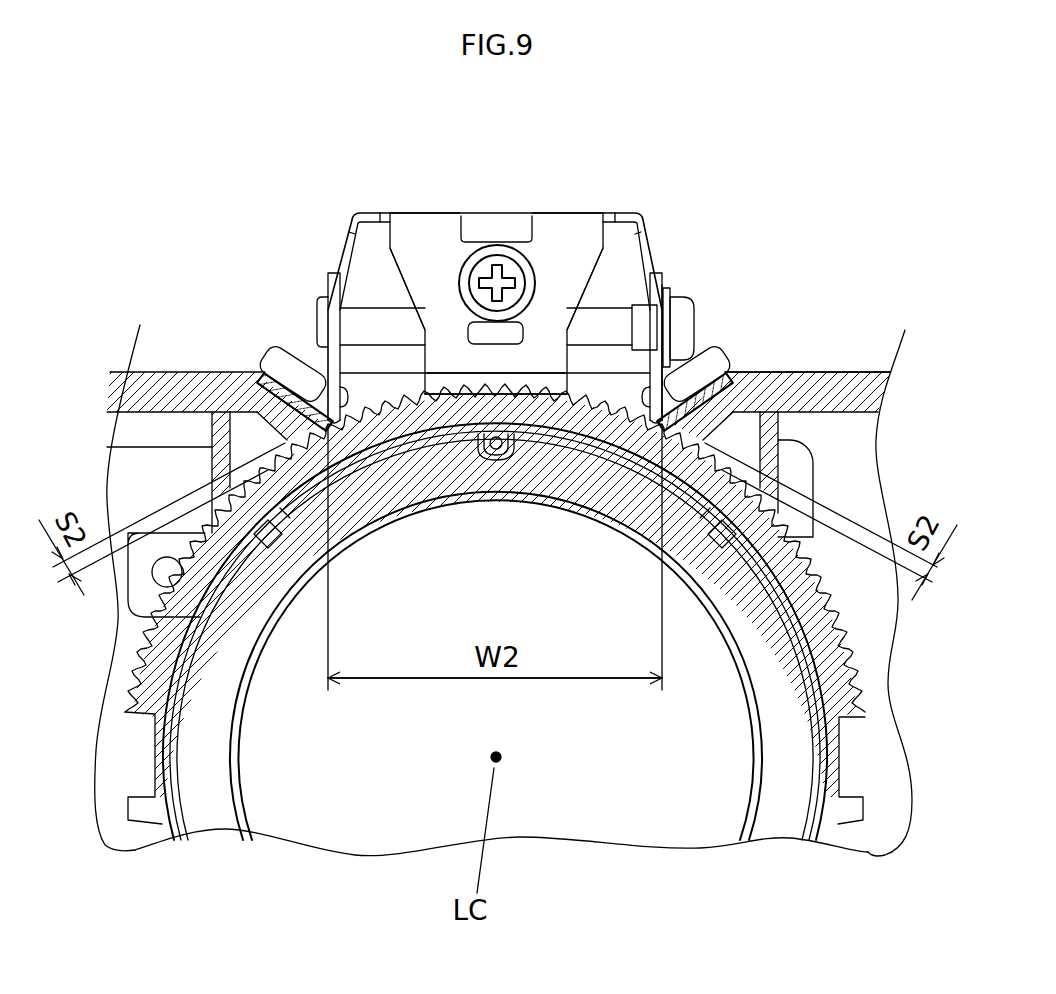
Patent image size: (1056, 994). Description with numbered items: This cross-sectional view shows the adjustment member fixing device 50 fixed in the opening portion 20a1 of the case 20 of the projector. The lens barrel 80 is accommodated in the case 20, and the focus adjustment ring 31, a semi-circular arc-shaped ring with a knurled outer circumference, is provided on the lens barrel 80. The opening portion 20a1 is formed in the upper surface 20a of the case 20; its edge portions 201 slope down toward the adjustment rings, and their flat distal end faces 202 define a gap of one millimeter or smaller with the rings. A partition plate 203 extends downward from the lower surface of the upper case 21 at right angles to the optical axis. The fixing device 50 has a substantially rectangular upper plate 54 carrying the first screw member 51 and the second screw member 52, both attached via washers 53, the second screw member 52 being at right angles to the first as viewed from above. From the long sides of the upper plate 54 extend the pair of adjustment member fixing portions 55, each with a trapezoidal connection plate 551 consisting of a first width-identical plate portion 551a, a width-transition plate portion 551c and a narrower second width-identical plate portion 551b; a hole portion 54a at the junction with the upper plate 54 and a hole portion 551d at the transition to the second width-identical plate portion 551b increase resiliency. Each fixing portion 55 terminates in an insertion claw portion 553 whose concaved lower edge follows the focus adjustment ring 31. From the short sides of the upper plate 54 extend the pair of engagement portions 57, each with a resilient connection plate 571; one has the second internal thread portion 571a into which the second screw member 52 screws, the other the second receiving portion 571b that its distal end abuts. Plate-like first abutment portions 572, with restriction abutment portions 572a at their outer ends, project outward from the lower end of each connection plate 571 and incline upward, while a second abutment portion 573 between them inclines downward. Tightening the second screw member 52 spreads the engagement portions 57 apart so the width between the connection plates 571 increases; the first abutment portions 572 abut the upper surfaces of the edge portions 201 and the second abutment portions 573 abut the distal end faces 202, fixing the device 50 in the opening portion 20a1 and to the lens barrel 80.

The case 20 is at (522, 553).
The upper surface 20a is at (866, 370).
The opening portion 20a1 is at (620, 378).
The upper case 21 is at (143, 393).
The edge portions 201 is at (288, 438).
The distal end faces 202 is at (274, 442).
The partition plate 203 is at (247, 432).
The focus adjustment ring 31 is at (848, 683).
The adjustment member fixing device 50 is at (543, 352).
The first screw member 51 is at (488, 265).
The second screw member 52 is at (703, 300).
The washers 53 is at (463, 263).
The upper plate 54 is at (505, 236).
The hole portion 54a is at (497, 232).
The adjustment member fixing portions 55 is at (485, 352).
The connection plate 551 is at (485, 352).
The first width-identical plate portion 551a is at (432, 243).
The second width-identical plate portion 551b is at (530, 362).
The width-transition plate portion 551c is at (437, 297).
The hole portion 551d is at (485, 346).
The insertion claw portion 553 is at (450, 384).
The engagement portions 57 is at (543, 352).
The connection plate 571 is at (495, 253).
The second internal thread portion 571a is at (664, 282).
The second receiving portion 571b is at (327, 312).
The first abutment portion 572 is at (277, 362).
The restriction abutment portion 572a is at (307, 373).
The second abutment portion 573 is at (343, 410).
The lens barrel 80 is at (790, 775).